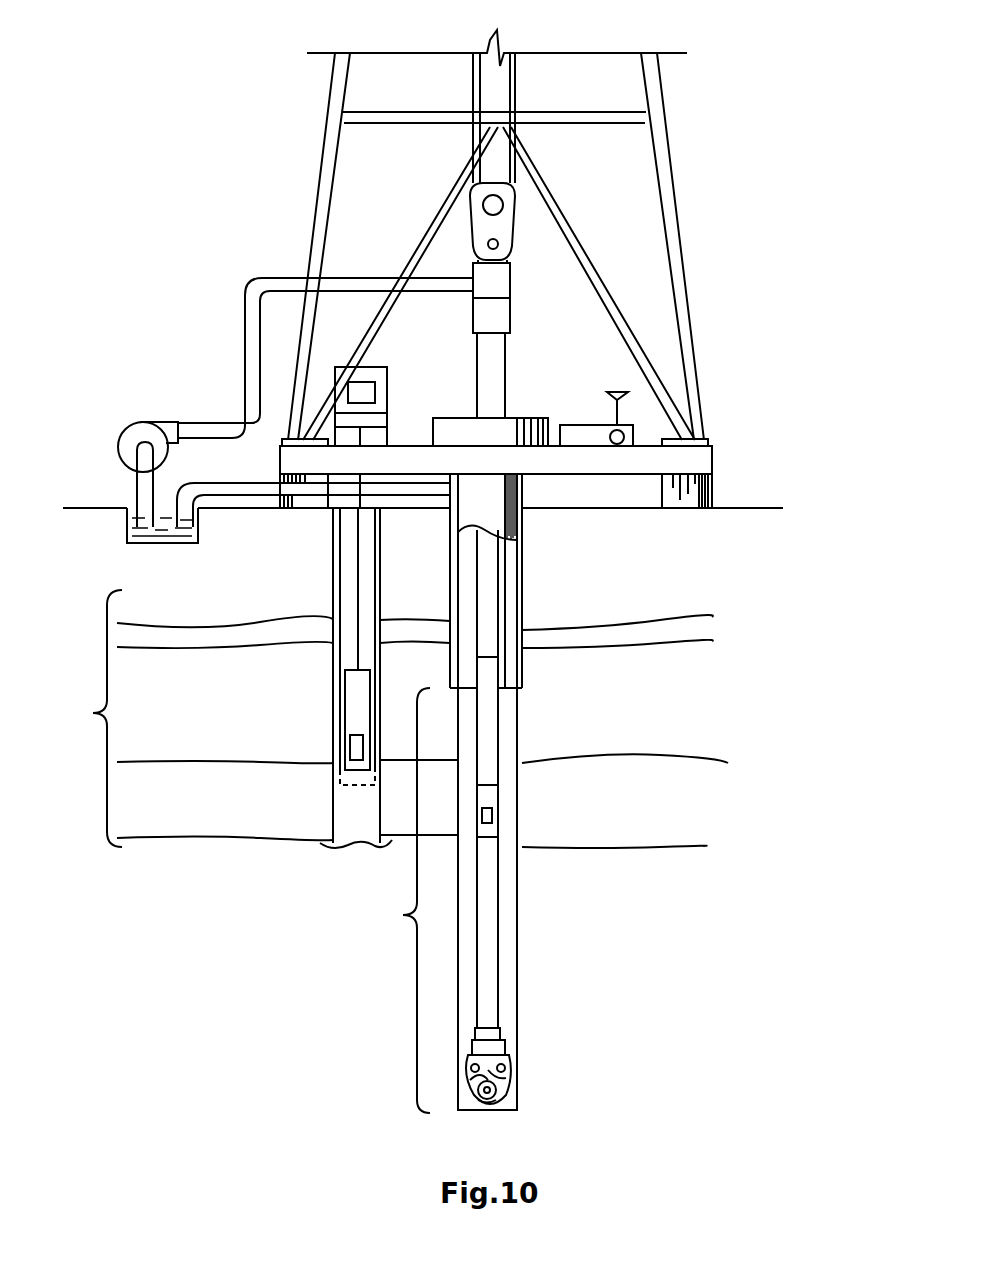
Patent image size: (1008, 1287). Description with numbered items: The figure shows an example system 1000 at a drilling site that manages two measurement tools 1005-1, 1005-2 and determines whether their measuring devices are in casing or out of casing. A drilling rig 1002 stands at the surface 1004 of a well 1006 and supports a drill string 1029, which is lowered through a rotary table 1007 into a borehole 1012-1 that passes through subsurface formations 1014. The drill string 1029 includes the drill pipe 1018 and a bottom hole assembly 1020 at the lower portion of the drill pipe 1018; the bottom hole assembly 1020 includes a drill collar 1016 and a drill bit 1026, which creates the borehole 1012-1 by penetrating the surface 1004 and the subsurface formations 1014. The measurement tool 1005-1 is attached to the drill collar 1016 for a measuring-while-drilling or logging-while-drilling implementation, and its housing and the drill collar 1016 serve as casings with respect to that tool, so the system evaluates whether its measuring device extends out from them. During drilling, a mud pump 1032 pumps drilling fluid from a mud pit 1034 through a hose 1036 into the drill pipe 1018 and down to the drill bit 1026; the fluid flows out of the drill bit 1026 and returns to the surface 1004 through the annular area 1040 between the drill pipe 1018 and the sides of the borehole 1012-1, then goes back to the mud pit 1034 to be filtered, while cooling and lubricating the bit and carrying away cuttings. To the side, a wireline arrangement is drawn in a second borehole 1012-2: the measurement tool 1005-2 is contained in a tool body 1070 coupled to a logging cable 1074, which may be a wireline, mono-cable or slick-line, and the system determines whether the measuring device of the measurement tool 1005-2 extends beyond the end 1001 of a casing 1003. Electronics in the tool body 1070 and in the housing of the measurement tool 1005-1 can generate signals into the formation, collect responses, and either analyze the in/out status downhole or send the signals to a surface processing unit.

The system 1000 is at (245, 116).
The drilling rig 1002 is at (675, 195).
The surface 1004 is at (730, 508).
The well 1006 is at (532, 500).
The rotary table 1007 is at (453, 418).
The drill string 1029 is at (508, 567).
The borehole 1012-1 is at (514, 629).
The borehole 1012-2 is at (333, 618).
The drill pipe 1018 is at (498, 702).
The annular area 1040 is at (507, 740).
The drill collar 1016 is at (515, 787).
The measurement tool 1005-1 is at (494, 815).
The measurement tool 1005-2 is at (355, 750).
The bottom hole assembly 1020 is at (403, 915).
The drill bit 1026 is at (510, 1070).
The subsurface formations 1014 is at (93, 713).
The tool body 1070 is at (345, 693).
The end of casing 1001 is at (356, 790).
The casing 1003 is at (378, 698).
The logging cable 1074 is at (358, 572).
The hose 1036 is at (243, 367).
The mud pump 1032 is at (153, 423).
The mud pit 1034 is at (130, 510).